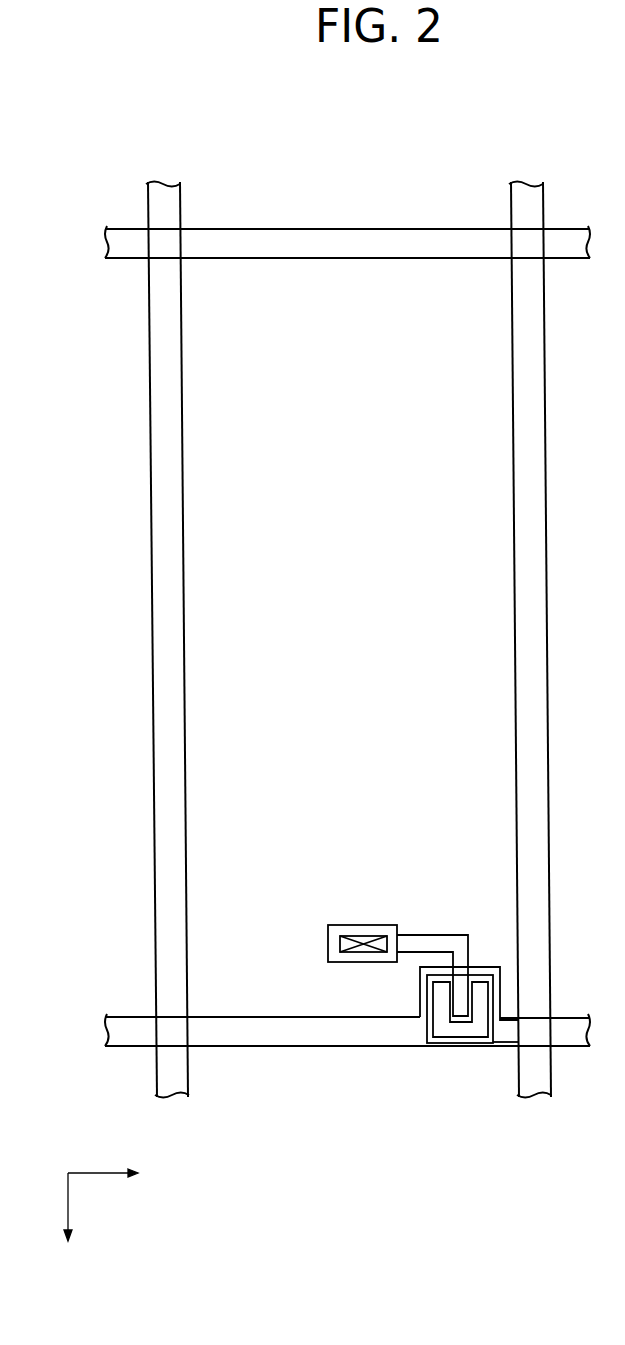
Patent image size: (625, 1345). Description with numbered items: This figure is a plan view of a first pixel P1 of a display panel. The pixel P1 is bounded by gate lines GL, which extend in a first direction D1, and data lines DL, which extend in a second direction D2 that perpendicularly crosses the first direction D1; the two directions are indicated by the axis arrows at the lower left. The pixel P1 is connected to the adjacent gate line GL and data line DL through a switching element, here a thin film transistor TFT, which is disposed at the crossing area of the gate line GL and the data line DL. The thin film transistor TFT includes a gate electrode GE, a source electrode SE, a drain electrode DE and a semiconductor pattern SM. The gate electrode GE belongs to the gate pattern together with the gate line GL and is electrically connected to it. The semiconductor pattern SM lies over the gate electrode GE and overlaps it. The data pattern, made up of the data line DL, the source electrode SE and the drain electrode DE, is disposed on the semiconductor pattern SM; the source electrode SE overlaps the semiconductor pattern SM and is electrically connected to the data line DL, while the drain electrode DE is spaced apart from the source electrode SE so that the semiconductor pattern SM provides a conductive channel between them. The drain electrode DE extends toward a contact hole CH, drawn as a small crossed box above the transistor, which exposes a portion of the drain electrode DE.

The gate line GL is at (103, 241).
The data line DL is at (527, 190).
The pixel P1 is at (262, 183).
The contact hole CH is at (362, 936).
The thin film transistor TFT is at (459, 1074).
The gate electrode GE is at (420, 991).
The source electrode SE is at (445, 1037).
The drain electrode DE is at (458, 1018).
The semiconductor pattern SM is at (483, 1043).
The first direction D1 is at (116, 1173).
The second direction D2 is at (71, 1221).